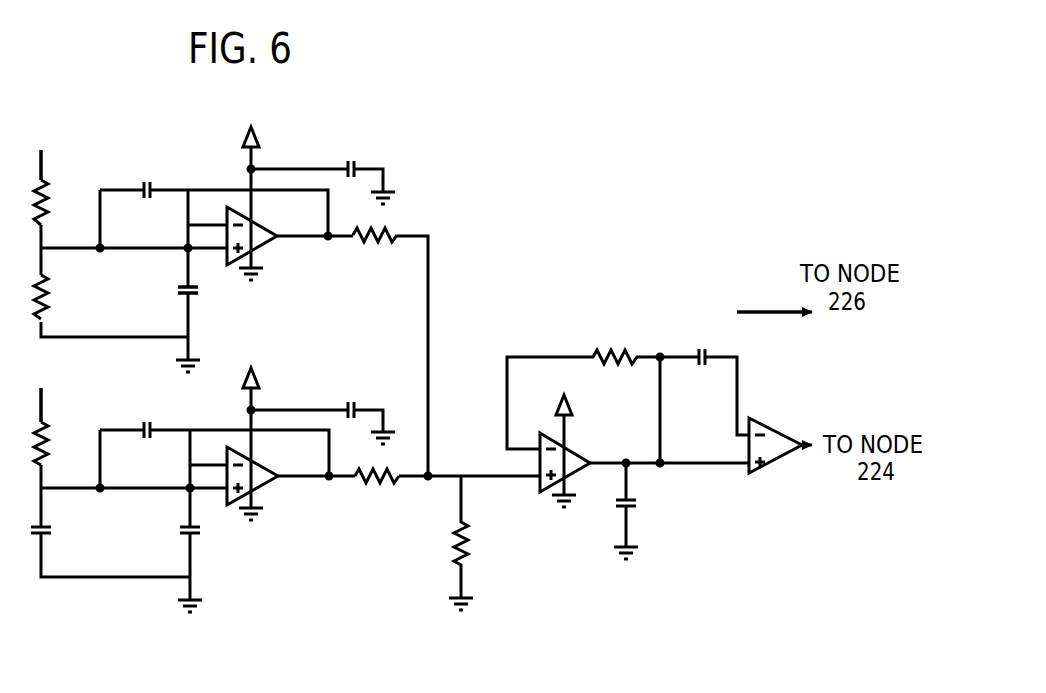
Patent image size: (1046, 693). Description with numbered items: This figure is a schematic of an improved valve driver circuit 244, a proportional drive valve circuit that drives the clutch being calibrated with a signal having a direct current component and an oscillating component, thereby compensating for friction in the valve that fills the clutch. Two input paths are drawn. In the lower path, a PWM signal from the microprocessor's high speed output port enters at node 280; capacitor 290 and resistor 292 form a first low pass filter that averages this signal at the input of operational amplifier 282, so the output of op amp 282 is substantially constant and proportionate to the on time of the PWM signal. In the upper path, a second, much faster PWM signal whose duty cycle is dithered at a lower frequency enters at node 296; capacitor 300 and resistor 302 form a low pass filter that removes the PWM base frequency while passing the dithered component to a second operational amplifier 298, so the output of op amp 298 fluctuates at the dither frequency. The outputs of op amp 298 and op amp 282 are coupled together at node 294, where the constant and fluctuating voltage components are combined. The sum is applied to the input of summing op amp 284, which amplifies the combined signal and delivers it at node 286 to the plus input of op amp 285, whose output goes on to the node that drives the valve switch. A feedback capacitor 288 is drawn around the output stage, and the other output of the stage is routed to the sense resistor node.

The valve driver circuit 244 is at (634, 200).
The node 296 is at (43, 140).
The resistor 302 is at (50, 186).
The capacitor 300 is at (180, 288).
The second operational amplifier 298 is at (262, 243).
The node 280 is at (42, 385).
The resistor 292 is at (50, 432).
The capacitor 290 is at (49, 528).
The operational amplifier 282 is at (262, 483).
The node 294 is at (413, 482).
The summing op amp 284 is at (574, 446).
The node 286 is at (711, 465).
The capacitor 288 is at (738, 384).
The op amp 285 is at (762, 419).